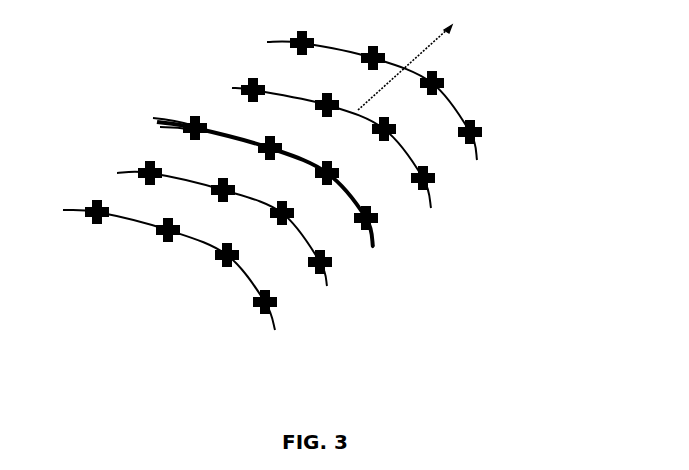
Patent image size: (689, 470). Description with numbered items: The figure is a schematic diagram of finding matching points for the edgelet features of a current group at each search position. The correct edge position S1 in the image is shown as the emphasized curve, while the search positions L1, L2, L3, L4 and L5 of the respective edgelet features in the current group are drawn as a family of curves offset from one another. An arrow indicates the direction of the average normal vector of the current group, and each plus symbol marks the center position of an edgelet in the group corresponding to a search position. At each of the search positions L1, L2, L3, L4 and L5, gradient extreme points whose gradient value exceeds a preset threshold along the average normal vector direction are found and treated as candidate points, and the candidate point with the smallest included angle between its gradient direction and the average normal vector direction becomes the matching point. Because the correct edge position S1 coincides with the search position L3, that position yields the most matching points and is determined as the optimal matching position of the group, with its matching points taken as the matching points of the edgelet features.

The correct edge position S1 is at (163, 117).
The search position L1 is at (478, 150).
The search position L2 is at (432, 197).
The search position L3 is at (375, 240).
The search position L4 is at (328, 277).
The search position L5 is at (277, 320).